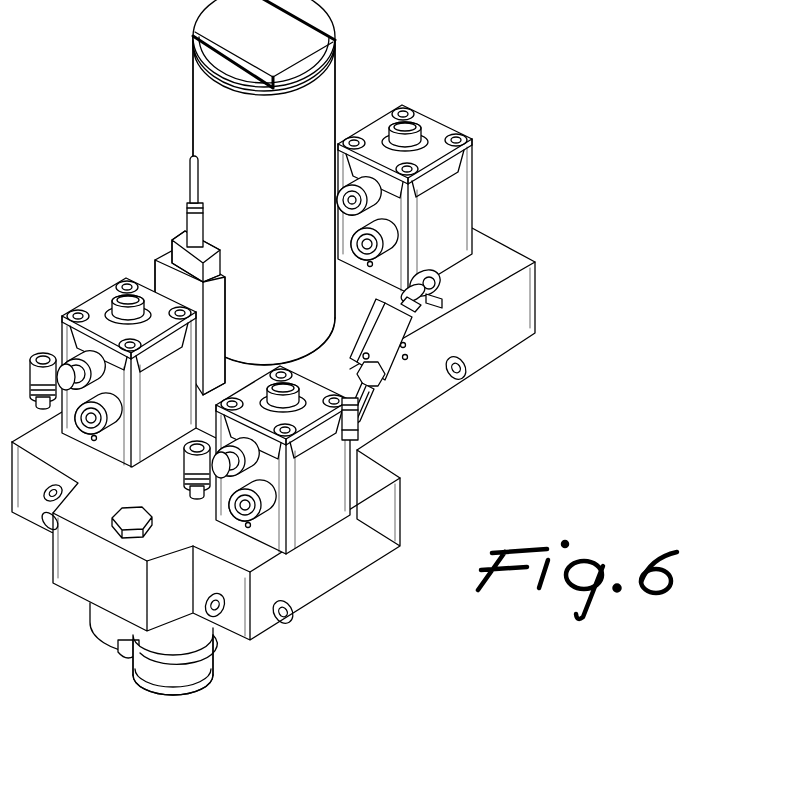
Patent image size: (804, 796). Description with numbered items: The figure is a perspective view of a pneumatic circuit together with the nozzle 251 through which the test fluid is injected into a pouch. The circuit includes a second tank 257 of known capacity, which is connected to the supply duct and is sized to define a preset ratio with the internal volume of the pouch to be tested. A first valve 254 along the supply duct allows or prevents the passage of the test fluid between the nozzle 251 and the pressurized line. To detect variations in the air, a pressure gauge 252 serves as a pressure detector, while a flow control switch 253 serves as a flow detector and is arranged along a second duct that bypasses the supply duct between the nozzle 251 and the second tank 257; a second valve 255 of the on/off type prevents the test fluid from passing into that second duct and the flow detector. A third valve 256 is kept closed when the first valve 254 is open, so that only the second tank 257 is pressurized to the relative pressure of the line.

The nozzle 251 is at (197, 667).
The pressure gauge 252 is at (170, 257).
The flow control switch 253 is at (390, 358).
The first valve 254 is at (453, 205).
The second valve 255 is at (317, 507).
The third valve 256 is at (100, 305).
The second tank 257 is at (215, 107).